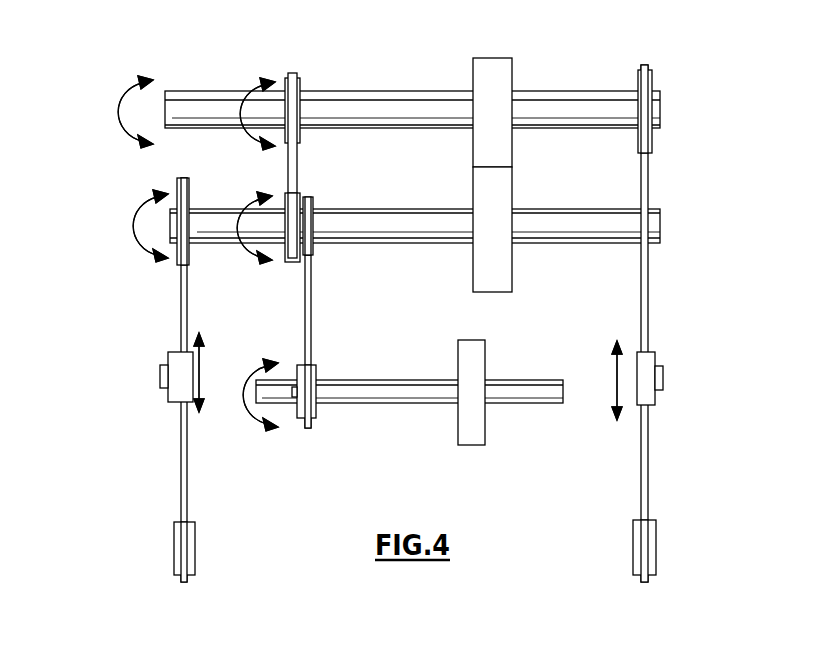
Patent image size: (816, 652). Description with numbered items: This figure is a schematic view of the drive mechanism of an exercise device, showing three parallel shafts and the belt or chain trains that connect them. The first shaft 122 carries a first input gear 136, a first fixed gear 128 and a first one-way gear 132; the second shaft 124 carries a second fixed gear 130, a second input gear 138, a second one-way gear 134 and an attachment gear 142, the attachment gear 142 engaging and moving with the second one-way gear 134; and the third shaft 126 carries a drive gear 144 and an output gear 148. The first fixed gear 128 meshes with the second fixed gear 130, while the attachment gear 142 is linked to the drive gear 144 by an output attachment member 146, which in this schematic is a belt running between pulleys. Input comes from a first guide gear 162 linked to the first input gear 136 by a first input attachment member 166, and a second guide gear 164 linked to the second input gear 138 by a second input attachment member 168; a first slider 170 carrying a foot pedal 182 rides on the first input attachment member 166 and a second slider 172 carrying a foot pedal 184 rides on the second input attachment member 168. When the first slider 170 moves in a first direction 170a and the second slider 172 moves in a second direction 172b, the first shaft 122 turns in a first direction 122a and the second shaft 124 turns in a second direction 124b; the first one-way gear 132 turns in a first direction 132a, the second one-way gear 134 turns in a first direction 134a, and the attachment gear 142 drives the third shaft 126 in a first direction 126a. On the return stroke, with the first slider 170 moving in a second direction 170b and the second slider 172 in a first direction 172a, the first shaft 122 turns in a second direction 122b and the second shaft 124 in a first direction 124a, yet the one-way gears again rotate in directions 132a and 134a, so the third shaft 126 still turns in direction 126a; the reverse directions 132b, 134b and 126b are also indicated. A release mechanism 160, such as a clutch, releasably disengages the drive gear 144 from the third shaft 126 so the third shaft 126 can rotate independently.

The first shaft 122 is at (560, 91).
The second shaft 124 is at (660, 230).
The third shaft 126 is at (548, 404).
The first fixed gear 128 is at (492, 62).
The second fixed gear 130 is at (498, 292).
The first one-way gear 132 is at (300, 78).
The second one-way gear 134 is at (289, 262).
The first input gear 136 is at (652, 72).
The second input gear 138 is at (179, 265).
The attachment gear 142 is at (313, 205).
The drive gear 144 is at (314, 418).
The output attachment member 146 is at (311, 298).
The output gear 148 is at (485, 445).
The release mechanism 160 is at (292, 392).
The first guide gear 162 is at (656, 545).
The second guide gear 164 is at (195, 548).
The first input attachment member 166 is at (648, 320).
The second input attachment member 168 is at (182, 462).
The first slider 170 is at (655, 354).
The second slider 172 is at (170, 355).
The foot pedal 182 is at (663, 382).
The foot pedal 184 is at (160, 378).
The first direction 122a is at (111, 100).
The second direction 122b is at (110, 118).
The first direction 124a is at (122, 216).
The second direction 124b is at (122, 227).
The first direction 126a is at (259, 378).
The second direction 126b is at (254, 412).
The first direction 132a is at (234, 100).
The second direction 132b is at (288, 152).
The first direction 134a is at (235, 212).
The second direction 134b is at (233, 239).
The first direction 170a is at (613, 365).
The second direction 170b is at (613, 396).
The first direction 172a is at (216, 356).
The second direction 172b is at (216, 387).